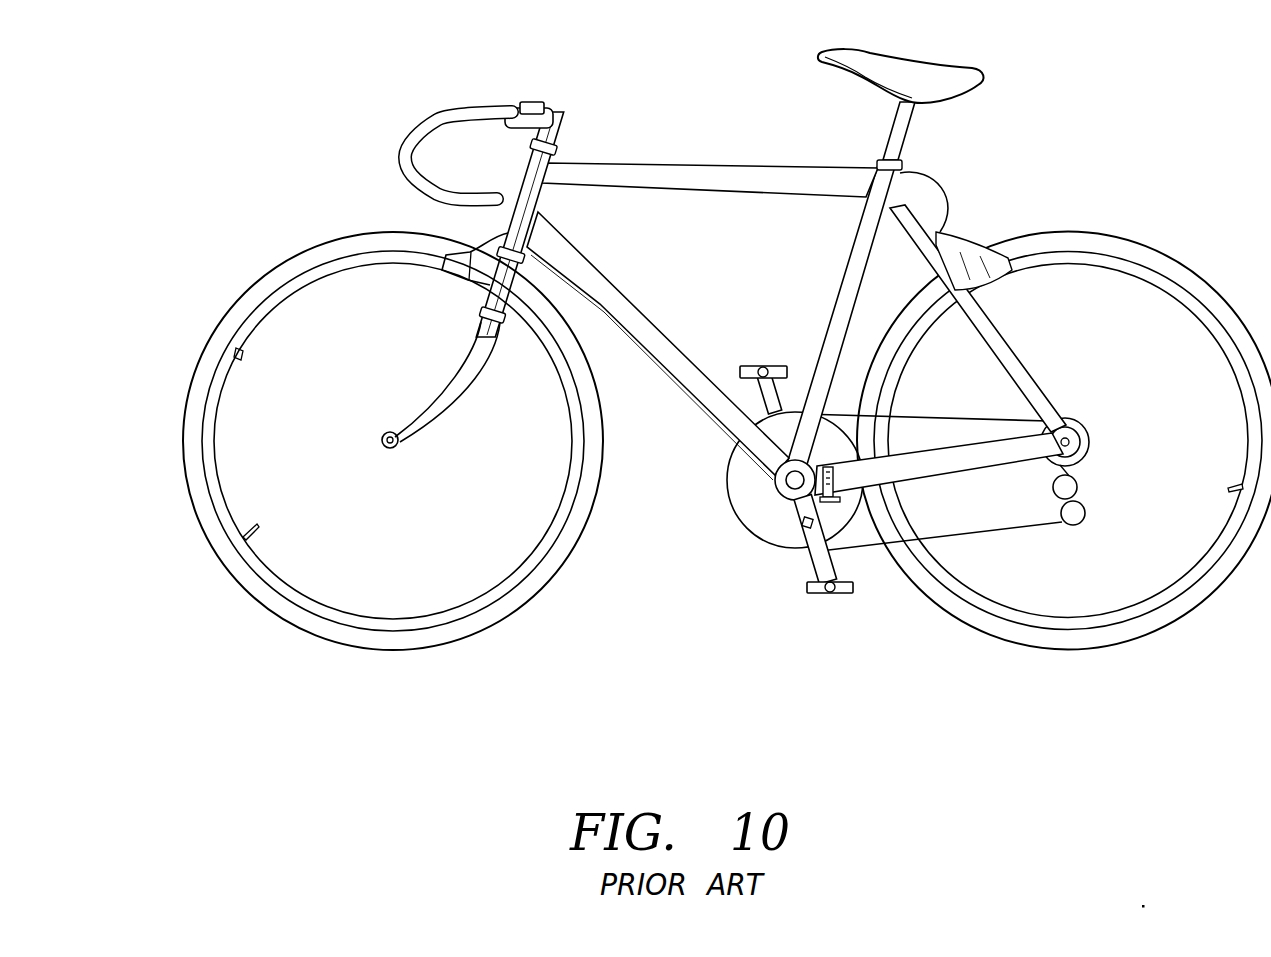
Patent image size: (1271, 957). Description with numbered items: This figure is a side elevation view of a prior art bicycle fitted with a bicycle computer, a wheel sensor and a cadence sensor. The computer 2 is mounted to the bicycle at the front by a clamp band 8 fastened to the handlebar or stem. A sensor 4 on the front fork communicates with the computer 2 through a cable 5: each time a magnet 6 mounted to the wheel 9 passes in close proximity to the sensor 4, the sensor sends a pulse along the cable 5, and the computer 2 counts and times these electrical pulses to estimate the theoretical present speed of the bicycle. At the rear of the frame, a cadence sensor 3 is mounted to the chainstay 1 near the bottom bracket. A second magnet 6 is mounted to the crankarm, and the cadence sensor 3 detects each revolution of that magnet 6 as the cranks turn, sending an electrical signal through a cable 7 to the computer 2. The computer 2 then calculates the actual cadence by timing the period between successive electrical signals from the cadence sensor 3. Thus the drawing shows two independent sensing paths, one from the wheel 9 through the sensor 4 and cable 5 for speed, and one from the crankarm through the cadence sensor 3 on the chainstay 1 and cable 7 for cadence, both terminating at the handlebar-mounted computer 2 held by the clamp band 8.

The chainstay 1 is at (1000, 532).
The computer 2 is at (540, 107).
The cadence sensor 3 is at (850, 537).
The sensor 4 is at (482, 316).
The cable 5 is at (555, 175).
The magnet 6 is at (238, 352).
The cable 7 is at (667, 342).
The clamp band 8 is at (517, 106).
The wheel 9 is at (180, 497).